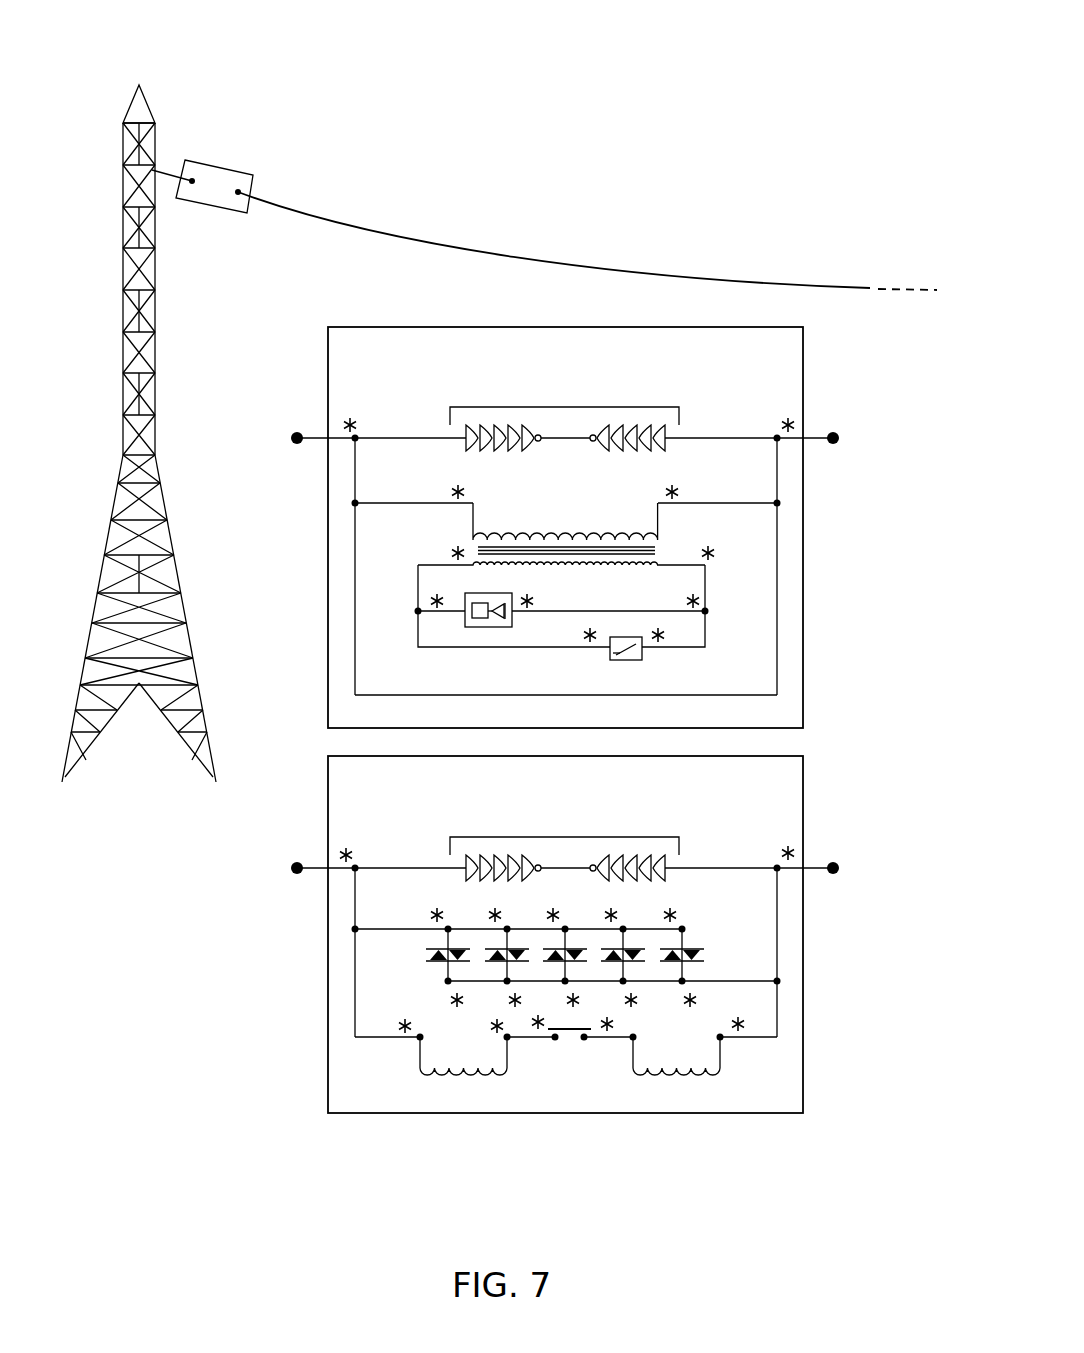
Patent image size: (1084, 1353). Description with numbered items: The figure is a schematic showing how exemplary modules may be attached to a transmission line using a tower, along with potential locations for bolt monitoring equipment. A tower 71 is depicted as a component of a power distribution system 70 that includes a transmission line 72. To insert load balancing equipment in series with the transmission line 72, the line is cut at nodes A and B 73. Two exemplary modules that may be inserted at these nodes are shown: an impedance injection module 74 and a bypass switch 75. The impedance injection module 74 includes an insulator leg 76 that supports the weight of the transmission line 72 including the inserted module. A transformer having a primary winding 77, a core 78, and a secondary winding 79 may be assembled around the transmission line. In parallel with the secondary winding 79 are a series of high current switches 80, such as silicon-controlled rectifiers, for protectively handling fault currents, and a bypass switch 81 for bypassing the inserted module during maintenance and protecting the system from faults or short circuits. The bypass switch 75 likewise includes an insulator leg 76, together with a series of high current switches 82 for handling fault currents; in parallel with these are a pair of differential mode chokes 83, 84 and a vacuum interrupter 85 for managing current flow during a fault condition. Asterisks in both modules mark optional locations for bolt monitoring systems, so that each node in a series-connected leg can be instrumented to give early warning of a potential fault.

The power distribution system 70 is at (330, 84).
The tower 71 is at (158, 312).
The transmission line 72 is at (548, 262).
The nodes A and B 73 is at (216, 165).
The impedance injection module 74 is at (420, 326).
The bypass switch 75 is at (805, 792).
The insulator leg 76 is at (548, 406).
The primary winding 77 is at (517, 540).
The core 78 is at (662, 550).
The secondary winding 79 is at (578, 572).
The high current switches 80 is at (494, 594).
The bypass switch 81 is at (643, 660).
The high current switches 82 is at (690, 941).
The differential mode choke 83 is at (432, 1083).
The differential mode choke 84 is at (684, 1083).
The vacuum interrupter 85 is at (568, 1042).